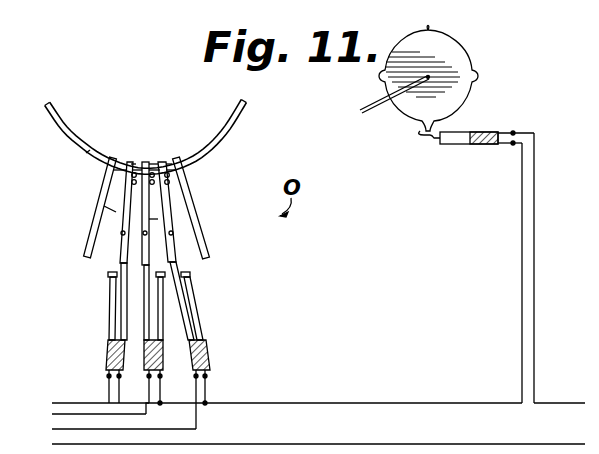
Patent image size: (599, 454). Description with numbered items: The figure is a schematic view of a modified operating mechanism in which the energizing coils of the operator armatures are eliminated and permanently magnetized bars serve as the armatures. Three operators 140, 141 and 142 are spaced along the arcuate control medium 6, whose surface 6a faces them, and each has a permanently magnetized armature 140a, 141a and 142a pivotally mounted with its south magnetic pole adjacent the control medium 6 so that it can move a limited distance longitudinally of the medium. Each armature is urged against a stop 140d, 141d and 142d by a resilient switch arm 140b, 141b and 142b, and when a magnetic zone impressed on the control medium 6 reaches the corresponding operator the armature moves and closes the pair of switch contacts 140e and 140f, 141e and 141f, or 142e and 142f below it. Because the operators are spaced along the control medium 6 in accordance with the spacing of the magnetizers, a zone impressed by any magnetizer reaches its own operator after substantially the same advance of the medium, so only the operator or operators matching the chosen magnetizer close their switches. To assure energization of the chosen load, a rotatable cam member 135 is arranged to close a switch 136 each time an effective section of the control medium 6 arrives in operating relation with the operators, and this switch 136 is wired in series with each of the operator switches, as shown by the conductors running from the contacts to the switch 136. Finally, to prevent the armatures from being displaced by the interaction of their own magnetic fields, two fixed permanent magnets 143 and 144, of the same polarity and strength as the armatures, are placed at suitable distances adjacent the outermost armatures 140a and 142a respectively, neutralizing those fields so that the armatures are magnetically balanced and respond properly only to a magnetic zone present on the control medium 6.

The control medium 6 is at (236, 133).
The guide surface 6a is at (92, 154).
The rotatable cam member 135 is at (465, 63).
The switch 136 is at (471, 133).
The operator 140 is at (176, 245).
The permanently magnetized armature 140a is at (188, 182).
The resilient switch arm 140b is at (206, 355).
The stop 140d is at (172, 163).
The switch contact 140e is at (186, 290).
The switch contact 140f is at (196, 282).
The operator 141 is at (137, 249).
The permanently magnetized armature 141a is at (152, 220).
The resilient switch arm 141b is at (166, 376).
The stop 141d is at (153, 164).
The switch contact 141e is at (152, 320).
The switch contact 141f is at (165, 300).
The operator 142 is at (119, 229).
The permanently magnetized armature 142a is at (103, 178).
The resilient switch arm 142b is at (108, 352).
The stop 142d is at (134, 164).
The switch contact 142e is at (113, 282).
The switch contact 142f is at (124, 300).
The permanent magnet 143 is at (170, 198).
The permanent magnet 144 is at (106, 207).